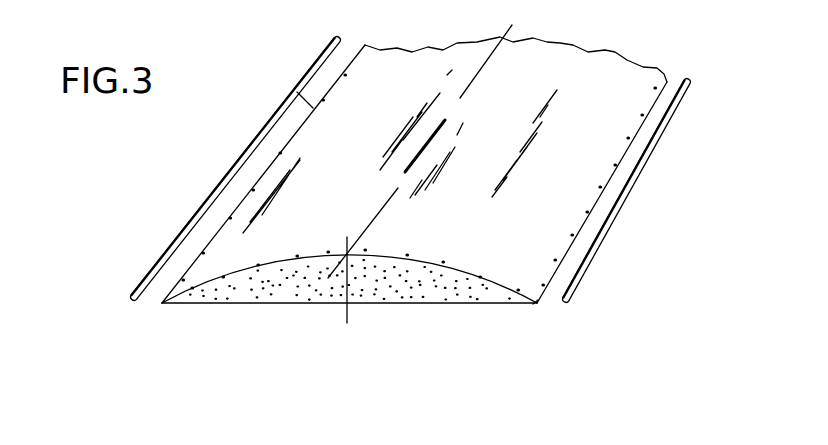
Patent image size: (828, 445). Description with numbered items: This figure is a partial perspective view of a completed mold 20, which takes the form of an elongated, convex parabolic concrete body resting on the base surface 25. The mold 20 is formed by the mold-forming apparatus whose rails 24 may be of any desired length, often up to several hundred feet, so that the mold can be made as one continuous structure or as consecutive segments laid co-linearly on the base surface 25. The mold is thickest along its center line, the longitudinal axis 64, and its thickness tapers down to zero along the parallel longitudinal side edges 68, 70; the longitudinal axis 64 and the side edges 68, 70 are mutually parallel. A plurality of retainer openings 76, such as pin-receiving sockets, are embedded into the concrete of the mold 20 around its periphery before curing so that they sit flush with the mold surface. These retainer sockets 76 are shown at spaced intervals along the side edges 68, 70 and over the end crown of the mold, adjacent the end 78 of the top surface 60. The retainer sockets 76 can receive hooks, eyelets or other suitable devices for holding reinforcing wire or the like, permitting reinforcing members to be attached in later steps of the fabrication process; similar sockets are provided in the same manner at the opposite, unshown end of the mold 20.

The mold 20 is at (485, 256).
The rails 24 is at (583, 280).
The base surface 25 is at (148, 358).
The top surface 60 is at (233, 257).
The longitudinal axis 64 is at (368, 229).
The longitudinal side edge 68 is at (553, 283).
The longitudinal side edge 70 is at (297, 92).
The retainer openings 76 is at (230, 220).
The end 78 is at (275, 262).